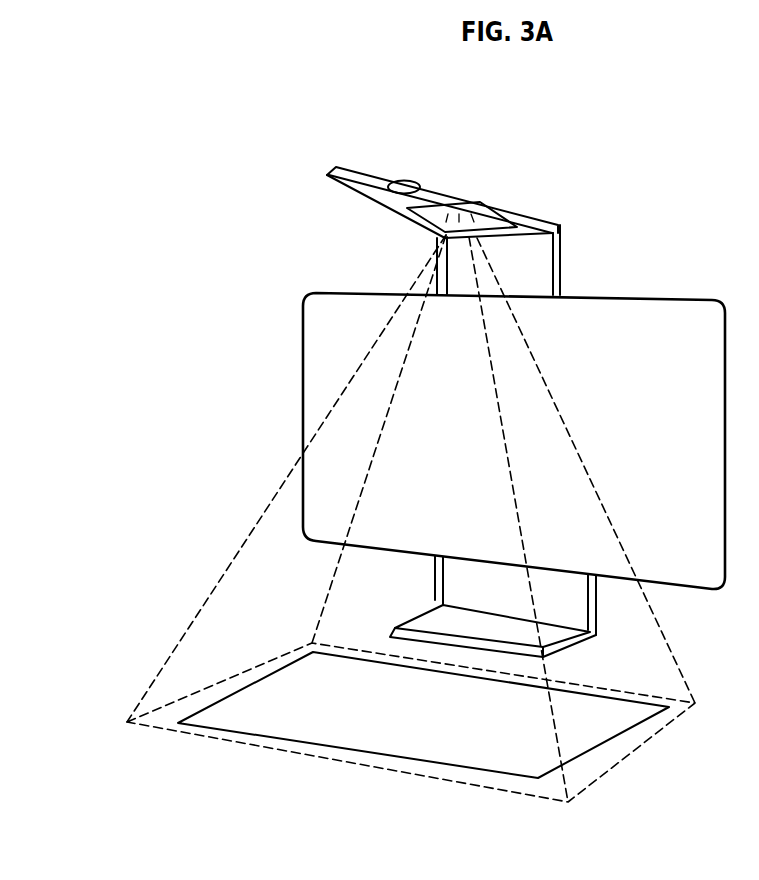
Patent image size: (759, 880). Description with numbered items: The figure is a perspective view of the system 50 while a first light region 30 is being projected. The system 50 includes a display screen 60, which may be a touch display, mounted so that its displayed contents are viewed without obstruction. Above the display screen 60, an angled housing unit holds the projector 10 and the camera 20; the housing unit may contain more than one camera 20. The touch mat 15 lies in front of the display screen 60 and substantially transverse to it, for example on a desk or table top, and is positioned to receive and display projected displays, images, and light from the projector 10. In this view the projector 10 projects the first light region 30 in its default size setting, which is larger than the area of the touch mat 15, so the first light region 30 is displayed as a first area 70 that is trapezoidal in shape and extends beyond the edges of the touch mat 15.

The projector 10 is at (483, 202).
The touch mat 15 is at (308, 743).
The camera 20 is at (404, 181).
The first light region 30 is at (502, 272).
The system 50 is at (144, 252).
The display screen 60 is at (676, 298).
The first area 70 is at (155, 730).